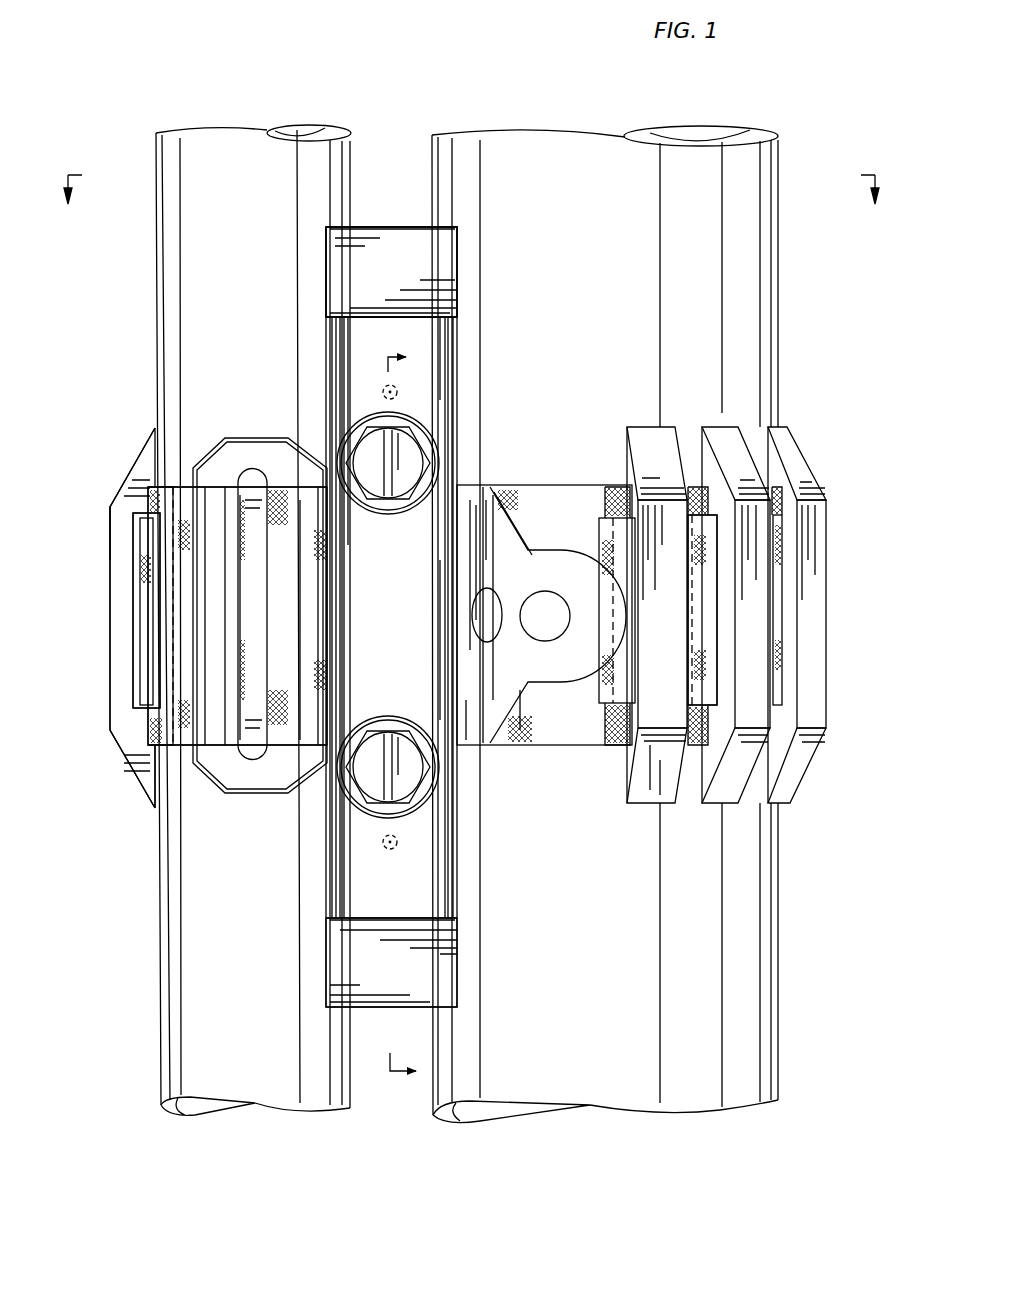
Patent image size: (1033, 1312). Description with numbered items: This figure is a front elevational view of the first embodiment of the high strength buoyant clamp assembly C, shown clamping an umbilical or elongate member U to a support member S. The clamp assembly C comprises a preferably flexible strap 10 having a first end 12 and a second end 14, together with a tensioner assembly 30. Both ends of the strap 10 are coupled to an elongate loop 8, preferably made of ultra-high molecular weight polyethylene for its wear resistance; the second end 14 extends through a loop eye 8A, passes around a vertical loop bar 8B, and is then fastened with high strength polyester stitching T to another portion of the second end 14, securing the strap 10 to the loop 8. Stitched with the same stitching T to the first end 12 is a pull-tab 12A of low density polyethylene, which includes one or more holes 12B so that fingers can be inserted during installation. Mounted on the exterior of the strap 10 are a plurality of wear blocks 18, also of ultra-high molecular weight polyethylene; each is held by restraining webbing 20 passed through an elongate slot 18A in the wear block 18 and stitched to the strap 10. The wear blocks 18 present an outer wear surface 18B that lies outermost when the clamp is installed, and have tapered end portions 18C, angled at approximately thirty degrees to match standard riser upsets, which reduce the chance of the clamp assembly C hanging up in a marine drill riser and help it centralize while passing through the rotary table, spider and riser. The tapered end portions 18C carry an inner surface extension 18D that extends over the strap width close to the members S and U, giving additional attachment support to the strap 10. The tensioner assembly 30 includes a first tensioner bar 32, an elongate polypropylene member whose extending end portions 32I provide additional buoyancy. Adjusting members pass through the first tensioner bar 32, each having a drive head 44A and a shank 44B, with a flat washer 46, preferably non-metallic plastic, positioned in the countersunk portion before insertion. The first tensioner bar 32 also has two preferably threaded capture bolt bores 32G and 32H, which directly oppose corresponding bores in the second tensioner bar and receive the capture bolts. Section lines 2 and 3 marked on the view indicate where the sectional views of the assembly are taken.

The elongate loop 8 is at (258, 440).
The loop eye 8A is at (258, 764).
The vertical loop bar 8B is at (205, 497).
The strap 10 is at (564, 750).
The first end 12 is at (313, 710).
The pull-tab 12A is at (556, 662).
The holes 12B is at (476, 615).
The second end 14 is at (183, 745).
The wear blocks 18 is at (467, 646).
The elongate slot 18A is at (135, 652).
The outer wear surface 18B is at (666, 720).
The tapered end portions 18C is at (798, 482).
The inner surface extension 18D is at (150, 440).
The restraining webbing 20 is at (728, 690).
The tensioner assembly 30 is at (455, 226).
The first tensioner bar 32 is at (388, 227).
The capture bolt bore 32G is at (390, 850).
The capture bolt bore 32H is at (400, 395).
The extending end portions 32I is at (455, 282).
The drive portion or head 44A is at (398, 748).
The shank 44B is at (413, 452).
The flat washer 46 is at (388, 512).
The section line 2 is at (467, 206).
The section line 3 is at (413, 722).
The umbilical or elongate member U is at (157, 294).
The support member S is at (778, 322).
The clamp assembly C is at (816, 416).
The stitching T is at (170, 506).